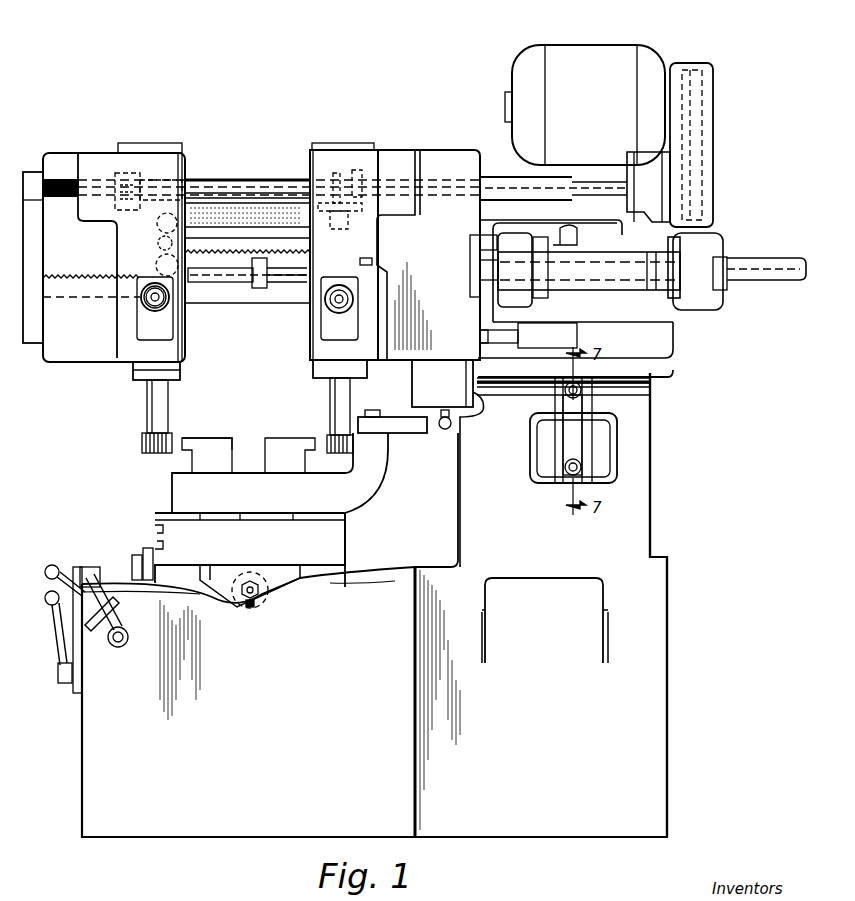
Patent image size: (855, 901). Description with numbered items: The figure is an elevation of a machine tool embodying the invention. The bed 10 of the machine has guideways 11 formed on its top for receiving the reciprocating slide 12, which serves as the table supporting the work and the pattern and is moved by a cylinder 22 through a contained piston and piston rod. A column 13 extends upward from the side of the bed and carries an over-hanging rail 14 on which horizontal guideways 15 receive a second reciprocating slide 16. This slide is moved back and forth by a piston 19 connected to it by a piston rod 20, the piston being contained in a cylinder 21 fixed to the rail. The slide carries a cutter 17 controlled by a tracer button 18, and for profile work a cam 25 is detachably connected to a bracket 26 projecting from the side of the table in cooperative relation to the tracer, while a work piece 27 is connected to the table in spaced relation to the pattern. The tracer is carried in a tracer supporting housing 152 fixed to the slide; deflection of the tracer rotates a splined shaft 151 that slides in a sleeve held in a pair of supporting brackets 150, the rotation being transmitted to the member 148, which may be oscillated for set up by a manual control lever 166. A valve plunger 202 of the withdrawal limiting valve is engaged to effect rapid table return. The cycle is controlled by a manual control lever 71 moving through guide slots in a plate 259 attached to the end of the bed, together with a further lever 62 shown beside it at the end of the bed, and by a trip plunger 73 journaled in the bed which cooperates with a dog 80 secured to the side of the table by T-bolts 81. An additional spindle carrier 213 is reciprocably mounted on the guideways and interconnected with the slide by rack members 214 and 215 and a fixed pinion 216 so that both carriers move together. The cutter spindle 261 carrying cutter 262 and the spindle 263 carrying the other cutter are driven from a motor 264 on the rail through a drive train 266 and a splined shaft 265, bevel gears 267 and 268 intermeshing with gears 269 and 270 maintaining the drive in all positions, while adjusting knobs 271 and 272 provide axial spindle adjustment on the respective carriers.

The bed 10 is at (82, 772).
The guideways 11 is at (340, 573).
The reciprocating slide 12 is at (155, 522).
The column 13 is at (655, 590).
The over-hanging rail 14 is at (258, 180).
The horizontal guideways 15 is at (240, 330).
The second reciprocating slide 16 is at (448, 165).
The cutter 17 is at (328, 432).
The tracer button 18 is at (451, 424).
The piston 19 is at (655, 285).
The piston rod 20 is at (610, 272).
The cylinder 21 is at (690, 252).
The cylinder 22 is at (262, 604).
The cam 25 is at (418, 433).
The bracket 26 is at (388, 484).
The work piece 27 is at (270, 438).
The lever 62 is at (57, 630).
The manual control lever 71 is at (52, 565).
The trip plunger 73 is at (132, 563).
The dog 80 is at (155, 538).
The T-bolts 81 is at (155, 547).
The member 148 is at (597, 405).
The supporting brackets 150 is at (557, 435).
The splined shaft 151 is at (510, 396).
The tracer supporting housing 152 is at (480, 412).
The manual control lever 166 is at (565, 394).
The valve plunger 202 is at (560, 333).
The additional spindle carrier 213 is at (66, 160).
The rack member 214 is at (60, 345).
The rack member 215 is at (203, 240).
The fixed pinion 216 is at (146, 305).
The plate 259 is at (86, 572).
The cutter spindle 261 is at (180, 374).
The cutter 262 is at (142, 445).
The spindle 263 is at (318, 373).
The motor 264 is at (605, 62).
The splined shaft 265 is at (283, 185).
The drive train 266 is at (712, 163).
The bevel gear 267 is at (362, 170).
The bevel gear 268 is at (128, 173).
The gear 269 is at (337, 175).
The gear 270 is at (168, 180).
The adjusting knob 271 is at (330, 310).
The adjusting knob 272 is at (152, 312).